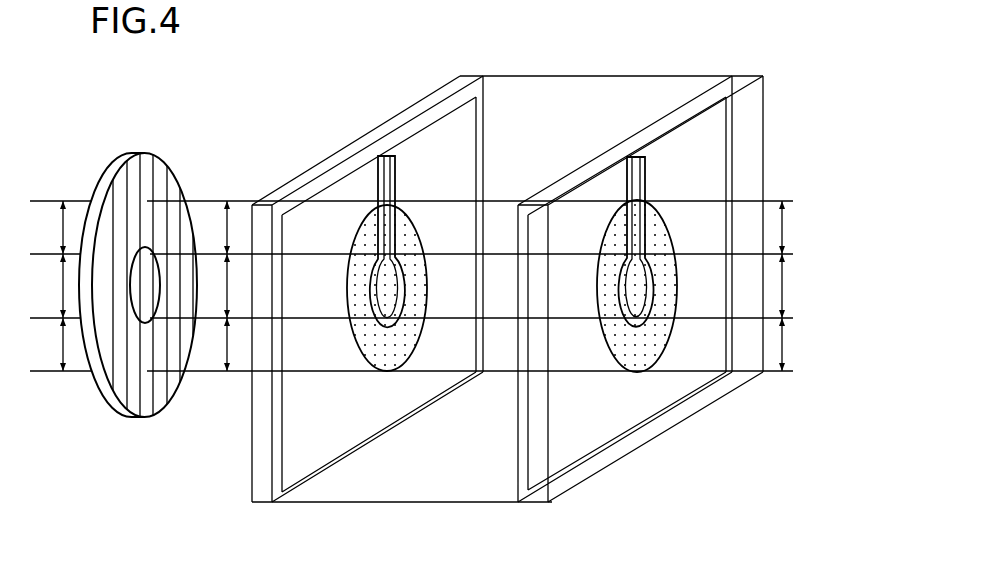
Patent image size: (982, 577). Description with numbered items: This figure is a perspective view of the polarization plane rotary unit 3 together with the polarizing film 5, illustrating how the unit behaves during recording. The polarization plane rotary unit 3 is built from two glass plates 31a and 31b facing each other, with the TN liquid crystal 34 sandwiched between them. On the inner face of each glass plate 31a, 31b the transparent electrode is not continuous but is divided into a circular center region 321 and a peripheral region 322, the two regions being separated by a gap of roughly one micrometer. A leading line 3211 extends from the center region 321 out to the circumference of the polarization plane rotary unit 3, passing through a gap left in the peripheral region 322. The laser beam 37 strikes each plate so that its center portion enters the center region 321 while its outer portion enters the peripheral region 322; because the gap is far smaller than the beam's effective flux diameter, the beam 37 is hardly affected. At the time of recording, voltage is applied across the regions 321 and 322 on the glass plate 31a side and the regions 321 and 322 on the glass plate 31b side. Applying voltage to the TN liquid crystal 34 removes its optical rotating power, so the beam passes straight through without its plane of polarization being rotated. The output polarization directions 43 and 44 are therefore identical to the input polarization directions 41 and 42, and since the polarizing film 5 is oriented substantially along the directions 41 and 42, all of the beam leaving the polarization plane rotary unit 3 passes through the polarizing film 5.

The polarization plane rotary unit 3 is at (505, 298).
The polarizing film 5 is at (145, 312).
The glass plate 31a is at (540, 502).
The glass plate 31b is at (484, 319).
The TN liquid crystal 34 is at (583, 95).
The laser beam 37 is at (352, 337).
The polarization direction 41 is at (782, 288).
The polarization direction 42 is at (782, 228).
The polarization direction 43 is at (227, 287).
The polarization direction 44 is at (225, 225).
The center region 321 is at (385, 278).
The peripheral region 322 is at (293, 468).
The leading line 3211 is at (390, 178).